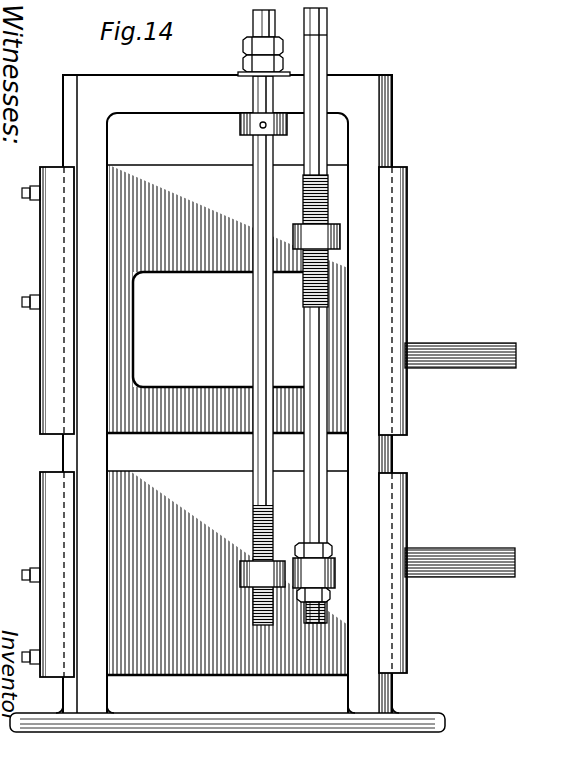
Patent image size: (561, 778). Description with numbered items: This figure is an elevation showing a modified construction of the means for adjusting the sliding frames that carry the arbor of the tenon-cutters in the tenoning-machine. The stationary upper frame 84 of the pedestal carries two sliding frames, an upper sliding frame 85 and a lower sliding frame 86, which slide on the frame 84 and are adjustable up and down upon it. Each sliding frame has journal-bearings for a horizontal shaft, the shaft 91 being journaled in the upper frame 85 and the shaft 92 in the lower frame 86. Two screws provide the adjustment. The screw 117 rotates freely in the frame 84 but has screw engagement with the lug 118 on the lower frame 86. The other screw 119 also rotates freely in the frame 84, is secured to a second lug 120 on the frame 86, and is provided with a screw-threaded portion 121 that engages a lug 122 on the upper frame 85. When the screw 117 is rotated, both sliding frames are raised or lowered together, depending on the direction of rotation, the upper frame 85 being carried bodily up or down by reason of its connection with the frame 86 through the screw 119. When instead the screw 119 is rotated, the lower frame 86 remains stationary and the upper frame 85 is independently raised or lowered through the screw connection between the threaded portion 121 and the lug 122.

The upper frame 84 is at (160, 108).
The sliding frame 85 is at (227, 299).
The sliding frame 86 is at (227, 573).
The horizontal shaft 91 is at (474, 343).
The horizontal shaft 92 is at (478, 555).
The screw 117 is at (252, 36).
The lug 118 is at (243, 588).
The screw 119 is at (328, 37).
The second lug 120 is at (300, 592).
The screw-threaded portion 121 is at (335, 208).
The lug 122 is at (341, 240).